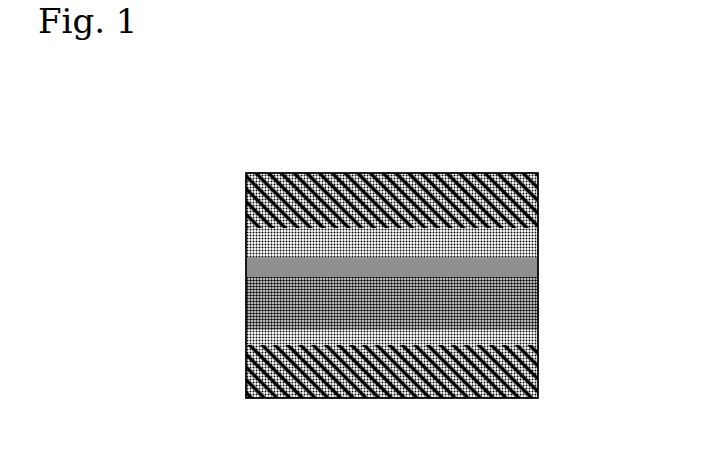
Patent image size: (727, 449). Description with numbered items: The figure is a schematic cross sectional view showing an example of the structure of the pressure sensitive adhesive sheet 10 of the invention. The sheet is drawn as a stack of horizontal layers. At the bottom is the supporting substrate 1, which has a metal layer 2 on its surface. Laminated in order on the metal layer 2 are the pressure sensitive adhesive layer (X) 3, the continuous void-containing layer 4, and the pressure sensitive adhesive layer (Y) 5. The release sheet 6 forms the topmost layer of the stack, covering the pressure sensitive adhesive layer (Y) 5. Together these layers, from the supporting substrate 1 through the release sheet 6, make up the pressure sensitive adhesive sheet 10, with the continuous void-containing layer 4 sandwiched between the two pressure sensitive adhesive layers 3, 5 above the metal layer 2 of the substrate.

The pressure sensitive adhesive sheet 10 is at (518, 138).
The release sheet 6 is at (538, 203).
The pressure sensitive adhesive layer (Y) 5 is at (246, 243).
The continuous void-containing layer 4 is at (538, 275).
The pressure sensitive adhesive layer (X) 3 is at (246, 311).
The metal layer 2 is at (538, 336).
The supporting substrate 1 is at (538, 373).